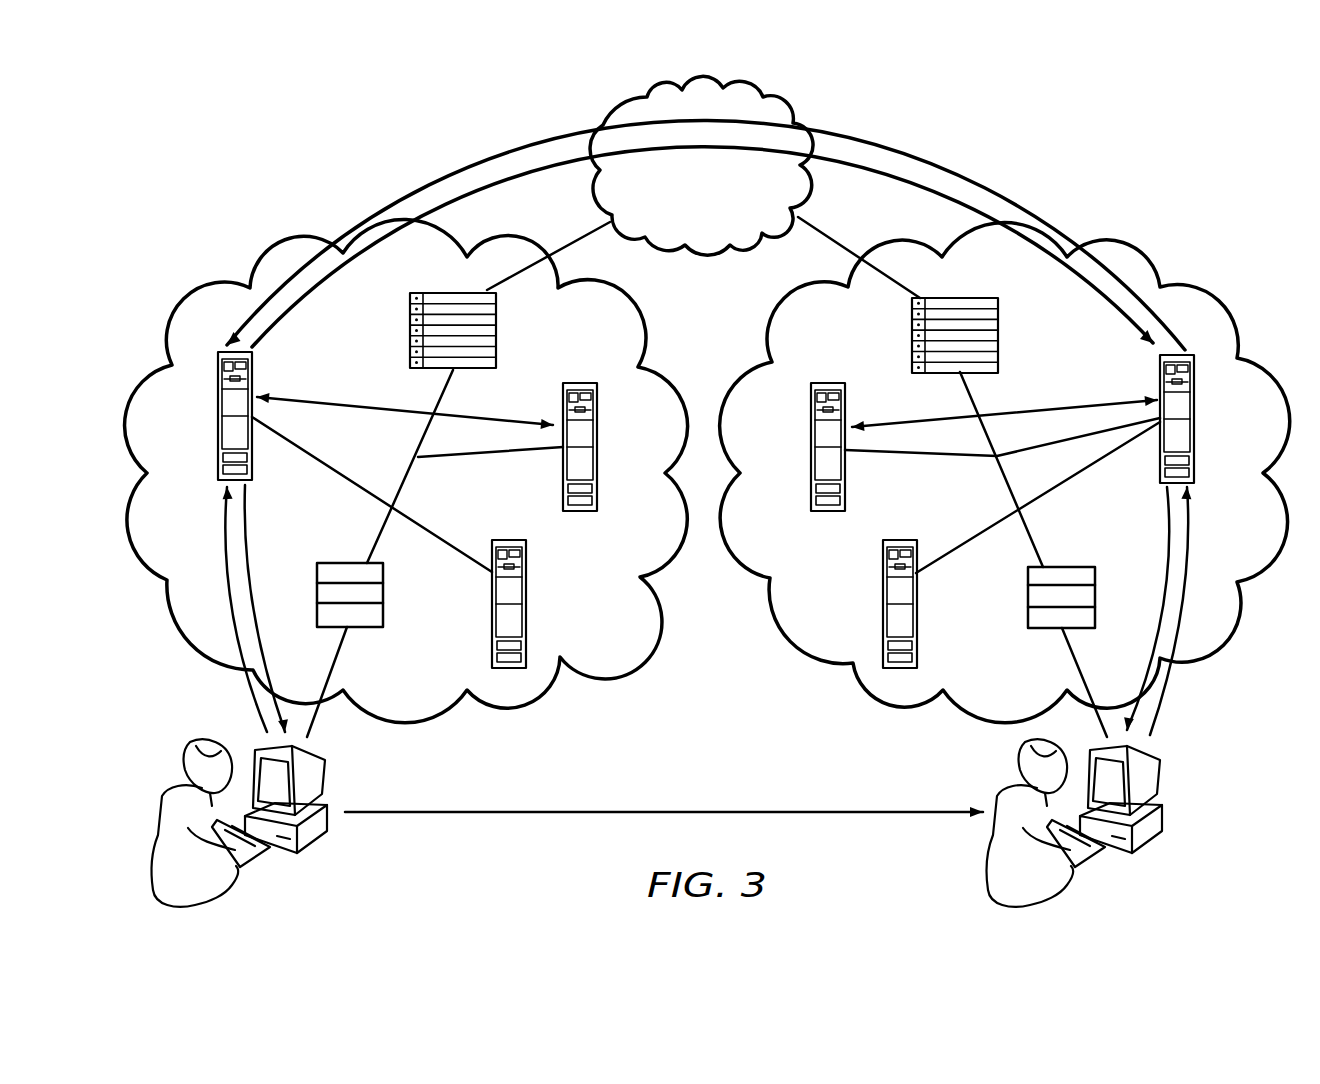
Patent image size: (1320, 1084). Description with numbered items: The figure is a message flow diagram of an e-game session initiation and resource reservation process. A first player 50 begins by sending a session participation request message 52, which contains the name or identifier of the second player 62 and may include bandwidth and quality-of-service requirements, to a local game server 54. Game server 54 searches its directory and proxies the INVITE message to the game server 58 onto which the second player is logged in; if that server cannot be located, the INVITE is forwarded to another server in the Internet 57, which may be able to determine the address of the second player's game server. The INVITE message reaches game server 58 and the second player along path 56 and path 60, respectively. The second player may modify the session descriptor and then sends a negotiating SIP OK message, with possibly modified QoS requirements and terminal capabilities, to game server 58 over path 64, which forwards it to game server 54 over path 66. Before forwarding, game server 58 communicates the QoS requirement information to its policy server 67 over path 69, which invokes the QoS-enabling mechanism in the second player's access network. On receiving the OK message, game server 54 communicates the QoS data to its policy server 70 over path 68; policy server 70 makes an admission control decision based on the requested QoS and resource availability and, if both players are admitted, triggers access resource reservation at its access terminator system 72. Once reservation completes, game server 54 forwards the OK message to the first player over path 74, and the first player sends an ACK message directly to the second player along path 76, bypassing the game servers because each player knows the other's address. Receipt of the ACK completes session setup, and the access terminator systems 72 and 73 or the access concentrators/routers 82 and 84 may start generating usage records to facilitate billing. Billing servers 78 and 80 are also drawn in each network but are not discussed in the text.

The first player 50 is at (190, 730).
The session participation request message 52 is at (223, 527).
The local game server 54 is at (220, 455).
The path 56 is at (885, 175).
The Internet 57 is at (693, 208).
The game server 58 is at (1193, 458).
The path 60 is at (1163, 567).
The second player 62 is at (1178, 802).
The path 64 is at (1190, 530).
The path 66 is at (948, 165).
The policy server 67 is at (812, 438).
The path 68 is at (338, 398).
The path 69 is at (1073, 400).
The policy server 70 is at (598, 437).
The access terminator system 72 is at (383, 593).
The access terminator system 73 is at (1028, 597).
The path 74 is at (248, 563).
The path 76 is at (512, 813).
The first billing server 78 is at (528, 595).
The second billing server 80 is at (883, 595).
The access concentrator/router 82 is at (410, 318).
The access concentrator/router 84 is at (1002, 323).